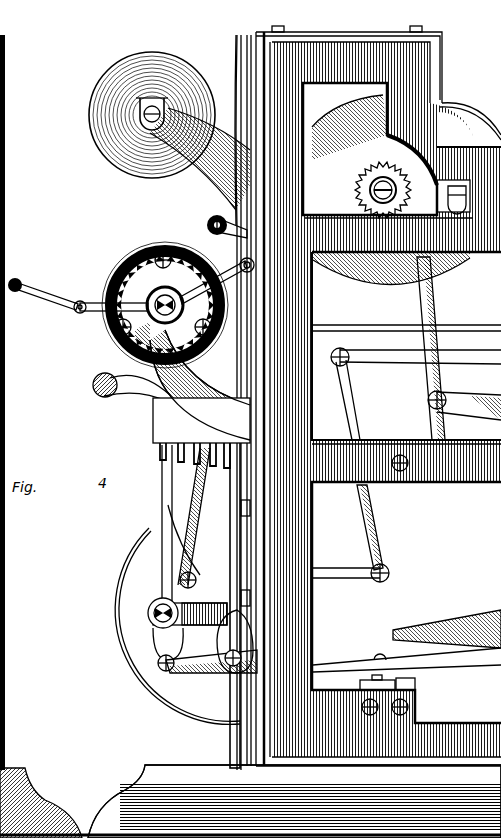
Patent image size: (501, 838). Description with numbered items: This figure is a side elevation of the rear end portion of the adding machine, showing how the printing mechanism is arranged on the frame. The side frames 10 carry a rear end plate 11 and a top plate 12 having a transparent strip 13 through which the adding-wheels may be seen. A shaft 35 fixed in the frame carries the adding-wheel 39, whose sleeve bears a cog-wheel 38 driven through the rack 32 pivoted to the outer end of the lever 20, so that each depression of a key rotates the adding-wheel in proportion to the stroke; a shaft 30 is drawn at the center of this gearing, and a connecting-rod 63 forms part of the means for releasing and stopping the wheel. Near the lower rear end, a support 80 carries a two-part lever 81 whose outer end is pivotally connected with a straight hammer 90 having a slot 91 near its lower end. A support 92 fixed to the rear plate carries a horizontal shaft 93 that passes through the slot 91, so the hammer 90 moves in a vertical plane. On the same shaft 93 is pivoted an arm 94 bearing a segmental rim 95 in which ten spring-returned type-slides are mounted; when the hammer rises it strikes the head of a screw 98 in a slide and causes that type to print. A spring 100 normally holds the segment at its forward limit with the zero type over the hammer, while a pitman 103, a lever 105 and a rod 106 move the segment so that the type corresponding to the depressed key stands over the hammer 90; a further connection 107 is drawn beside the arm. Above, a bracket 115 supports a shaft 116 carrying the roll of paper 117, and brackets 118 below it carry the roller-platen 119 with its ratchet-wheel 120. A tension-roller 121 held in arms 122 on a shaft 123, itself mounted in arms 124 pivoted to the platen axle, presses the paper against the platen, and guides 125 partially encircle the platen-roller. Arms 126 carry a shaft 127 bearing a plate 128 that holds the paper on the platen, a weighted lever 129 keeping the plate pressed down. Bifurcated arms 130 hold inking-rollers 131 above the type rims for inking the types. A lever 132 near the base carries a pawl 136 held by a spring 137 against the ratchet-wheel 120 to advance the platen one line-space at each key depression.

The side frames 10 is at (495, 257).
The rear end plate 11 is at (236, 30).
The top plate 12 is at (444, 33).
The transparent strip 13 is at (452, 116).
The lever 20 is at (472, 396).
The shaft 30 is at (376, 190).
The rack 32 is at (438, 312).
The shaft 35 is at (6, 201).
The cog-wheel 38 is at (365, 168).
The adding-wheel 39 is at (391, 190).
The connecting-rod 63 is at (368, 326).
The support 80 is at (418, 690).
The lever 81 is at (202, 668).
The hammer 90 is at (162, 503).
The slot 91 is at (162, 642).
The support 92 is at (208, 610).
The horizontal shaft 93 is at (148, 614).
The arm 94 is at (194, 516).
The segmental rim 95 is at (153, 442).
The screw 98 is at (160, 460).
The spring 100 is at (142, 556).
The pitman 103 is at (416, 360).
The lever 105 is at (395, 406).
The rod 106 is at (352, 582).
The spring 107 is at (190, 575).
The bracket 115 is at (220, 172).
The shaft 116 is at (118, 172).
The roll of paper 117 is at (153, 126).
The brackets 118 is at (200, 385).
The roller-platen 119 is at (100, 350).
The ratchet-wheel 120 is at (163, 298).
The tension-roller 121 is at (209, 223).
The arms 122 is at (250, 252).
The shaft 123 is at (250, 268).
The arms 124 is at (201, 293).
The guides 125 is at (148, 395).
The arms 126 is at (114, 310).
The shaft 127 is at (78, 313).
The plate 128 is at (83, 318).
The weighted lever 129 is at (26, 286).
The bifurcated arms 130 is at (158, 420).
The inking-rollers 131 is at (96, 389).
The lever 132 is at (423, 630).
The pawl 136 is at (240, 560).
The spring 137 is at (236, 676).